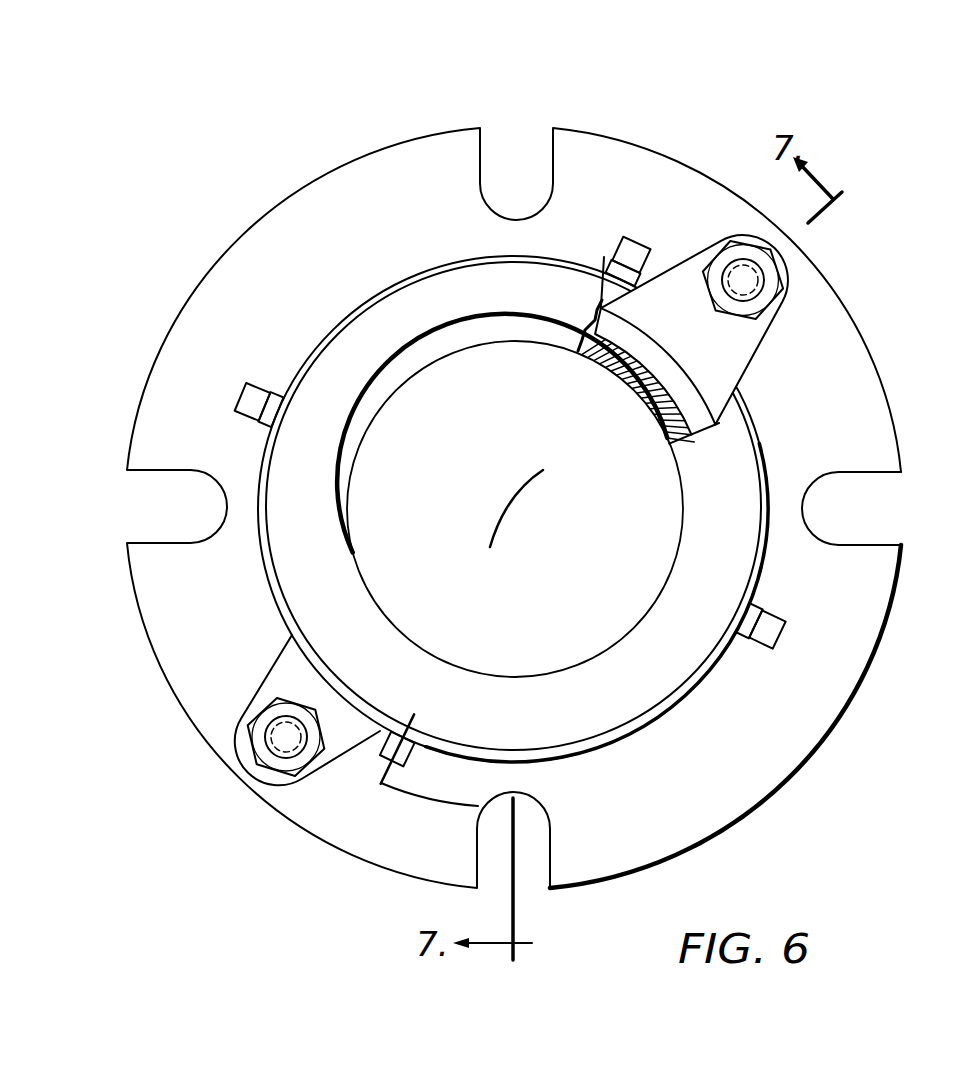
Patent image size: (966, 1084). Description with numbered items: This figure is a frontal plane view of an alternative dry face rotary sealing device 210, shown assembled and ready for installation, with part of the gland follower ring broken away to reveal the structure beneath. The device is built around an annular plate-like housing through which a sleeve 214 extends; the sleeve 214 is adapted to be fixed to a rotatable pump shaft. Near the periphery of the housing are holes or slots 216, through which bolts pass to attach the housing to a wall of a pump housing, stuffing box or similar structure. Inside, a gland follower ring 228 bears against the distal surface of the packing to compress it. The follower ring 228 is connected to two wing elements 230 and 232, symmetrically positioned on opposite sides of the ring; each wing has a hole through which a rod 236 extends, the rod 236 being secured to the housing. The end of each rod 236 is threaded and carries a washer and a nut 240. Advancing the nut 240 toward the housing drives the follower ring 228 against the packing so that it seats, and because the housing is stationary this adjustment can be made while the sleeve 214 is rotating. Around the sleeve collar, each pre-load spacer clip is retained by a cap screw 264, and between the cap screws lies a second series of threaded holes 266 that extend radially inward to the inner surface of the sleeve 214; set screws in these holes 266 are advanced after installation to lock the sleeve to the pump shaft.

The dry face sealing device 210 is at (642, 131).
The sleeve 214 is at (633, 386).
The slots 216 is at (867, 478).
The gland follower ring 228 is at (683, 388).
The wing element 230 is at (741, 353).
The wing element 232 is at (287, 653).
The rod 236 is at (752, 290).
The nut 240 is at (783, 272).
The cap screw 264 is at (386, 740).
The threaded holes 266 is at (283, 386).